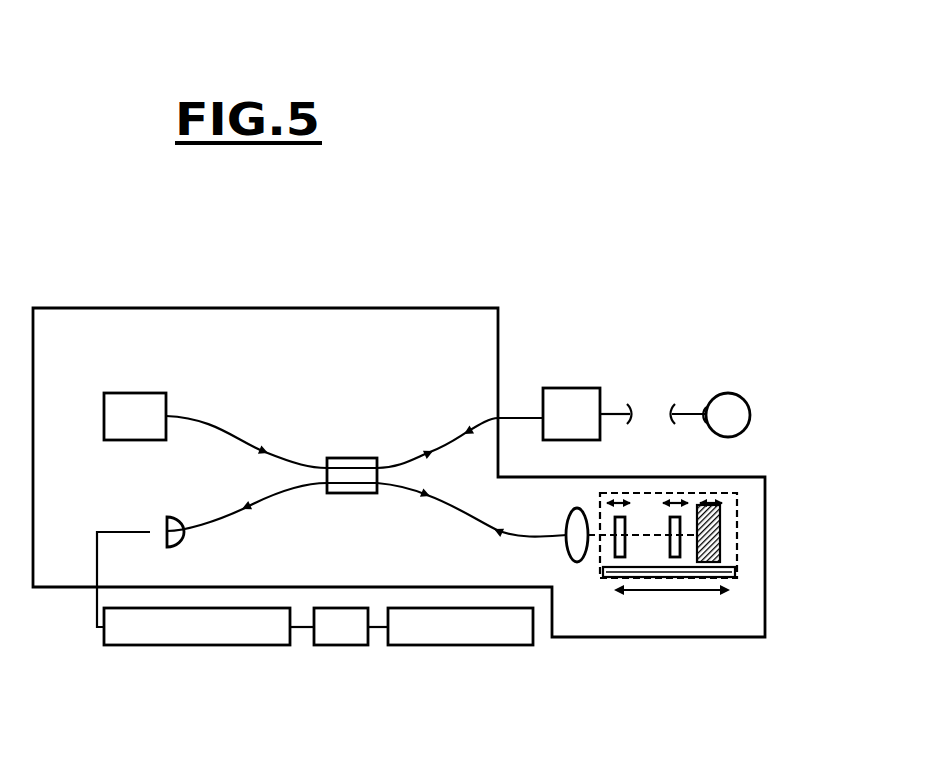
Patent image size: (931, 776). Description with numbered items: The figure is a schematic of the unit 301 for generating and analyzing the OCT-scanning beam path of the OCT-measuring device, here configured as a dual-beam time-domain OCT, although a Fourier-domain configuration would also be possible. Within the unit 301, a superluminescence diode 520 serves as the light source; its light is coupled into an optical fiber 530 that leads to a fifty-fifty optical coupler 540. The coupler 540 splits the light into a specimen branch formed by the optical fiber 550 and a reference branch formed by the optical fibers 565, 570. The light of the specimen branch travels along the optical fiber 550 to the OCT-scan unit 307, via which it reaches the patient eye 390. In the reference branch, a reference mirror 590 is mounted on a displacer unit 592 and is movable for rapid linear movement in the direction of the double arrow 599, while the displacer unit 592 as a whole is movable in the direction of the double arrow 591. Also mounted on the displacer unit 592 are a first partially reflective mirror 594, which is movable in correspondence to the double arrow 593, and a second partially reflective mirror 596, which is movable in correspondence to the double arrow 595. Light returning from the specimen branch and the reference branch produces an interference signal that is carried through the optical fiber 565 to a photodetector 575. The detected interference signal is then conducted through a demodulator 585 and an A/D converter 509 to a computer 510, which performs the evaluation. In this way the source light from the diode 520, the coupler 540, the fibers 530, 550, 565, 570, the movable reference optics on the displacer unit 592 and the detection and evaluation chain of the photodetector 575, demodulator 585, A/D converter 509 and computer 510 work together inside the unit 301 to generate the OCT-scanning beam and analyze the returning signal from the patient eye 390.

The unit for generating and analyzing an OCT-scanning beam path 301 is at (395, 308).
The OCT-scan unit 307 is at (573, 388).
The patient eye 390 is at (728, 400).
The superluminescence diode 520 is at (130, 440).
The optical fiber 530 is at (218, 433).
The 50%/50% optical coupler 540 is at (348, 493).
The optical fiber of specimen branch 550 is at (450, 440).
The optical fiber of reference branch 565 is at (262, 503).
The optical fiber of reference branch 570 is at (445, 500).
The photodetector 575 is at (170, 540).
The demodulator 585 is at (170, 645).
The A/D converter 509 is at (342, 645).
The computer 510 is at (470, 645).
The reference mirror 590 is at (720, 514).
The double arrow 591 is at (693, 592).
The displacer unit 592 is at (737, 548).
The double arrow 593 is at (615, 490).
The first partially reflective mirror 594 is at (612, 555).
The double arrow 595 is at (676, 497).
The second partially reflective mirror 596 is at (665, 557).
The double arrow 599 is at (710, 500).